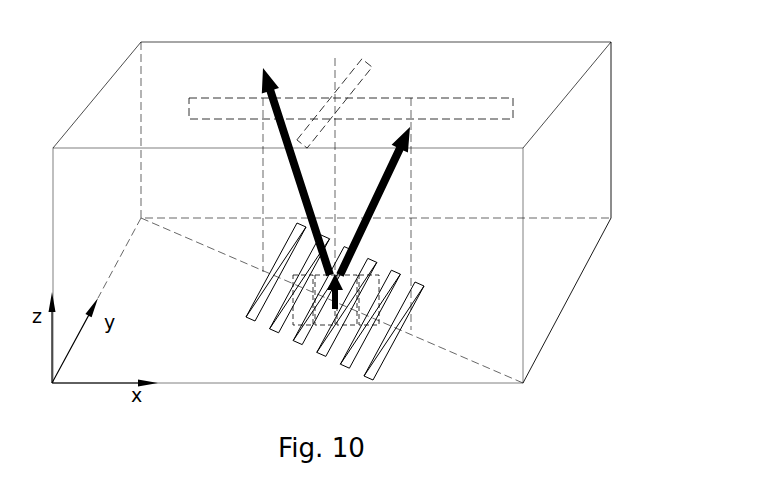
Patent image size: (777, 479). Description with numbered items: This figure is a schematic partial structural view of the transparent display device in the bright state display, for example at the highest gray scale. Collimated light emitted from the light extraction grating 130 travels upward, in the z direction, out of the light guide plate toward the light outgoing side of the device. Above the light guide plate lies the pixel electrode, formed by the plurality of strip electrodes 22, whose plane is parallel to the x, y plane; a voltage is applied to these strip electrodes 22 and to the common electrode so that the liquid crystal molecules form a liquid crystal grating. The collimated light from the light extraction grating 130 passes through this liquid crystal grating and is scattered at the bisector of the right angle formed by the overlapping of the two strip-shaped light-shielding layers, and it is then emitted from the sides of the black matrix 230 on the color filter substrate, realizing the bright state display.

The black matrix 230 is at (378, 105).
The strip electrodes 22 is at (424, 284).
The light extraction grating 130 is at (302, 322).